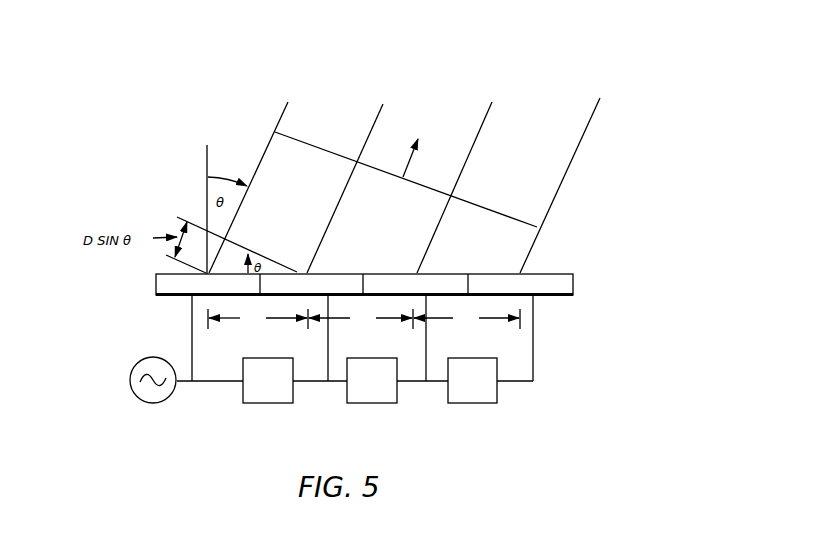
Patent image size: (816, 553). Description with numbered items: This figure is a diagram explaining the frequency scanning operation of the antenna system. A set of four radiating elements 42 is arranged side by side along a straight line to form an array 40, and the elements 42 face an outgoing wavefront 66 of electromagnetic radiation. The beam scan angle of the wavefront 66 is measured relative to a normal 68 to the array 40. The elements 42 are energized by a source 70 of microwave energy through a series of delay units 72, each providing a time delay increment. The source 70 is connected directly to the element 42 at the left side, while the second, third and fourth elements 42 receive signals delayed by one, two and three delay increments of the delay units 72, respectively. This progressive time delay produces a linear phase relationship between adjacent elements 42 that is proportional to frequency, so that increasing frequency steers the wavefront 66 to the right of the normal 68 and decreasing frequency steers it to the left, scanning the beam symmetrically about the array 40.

The array 40 is at (136, 287).
The radiating elements 42 is at (178, 287).
The outgoing wavefront 66 is at (482, 205).
The normal 68 is at (207, 157).
The source 70 is at (132, 369).
The delay units 72 is at (270, 404).